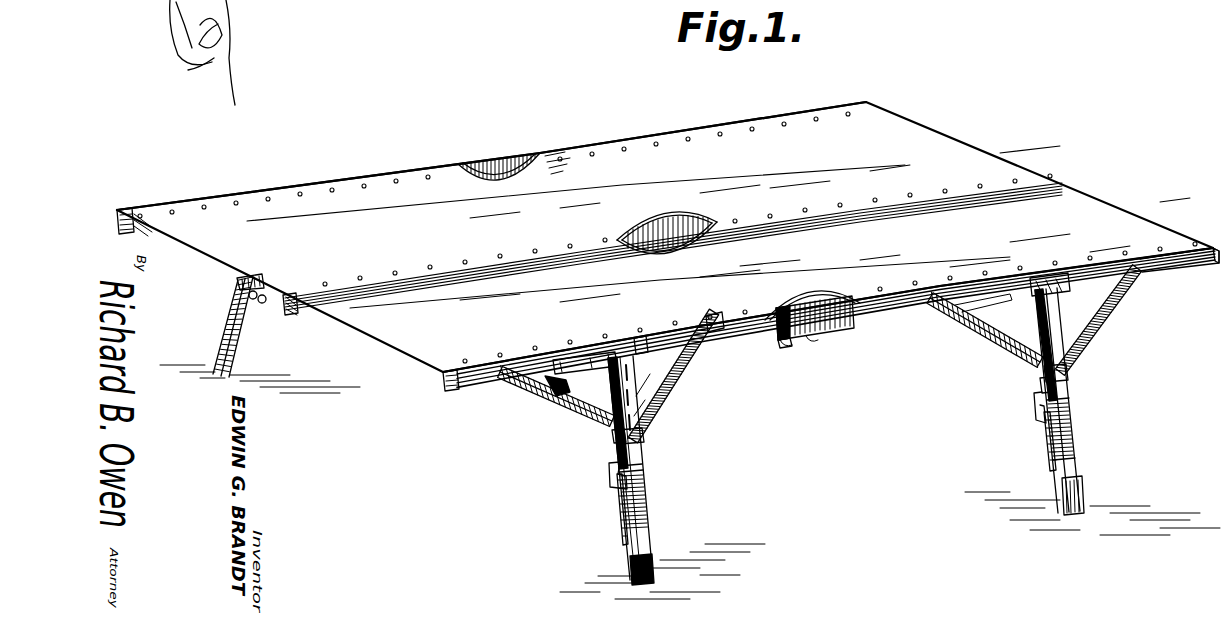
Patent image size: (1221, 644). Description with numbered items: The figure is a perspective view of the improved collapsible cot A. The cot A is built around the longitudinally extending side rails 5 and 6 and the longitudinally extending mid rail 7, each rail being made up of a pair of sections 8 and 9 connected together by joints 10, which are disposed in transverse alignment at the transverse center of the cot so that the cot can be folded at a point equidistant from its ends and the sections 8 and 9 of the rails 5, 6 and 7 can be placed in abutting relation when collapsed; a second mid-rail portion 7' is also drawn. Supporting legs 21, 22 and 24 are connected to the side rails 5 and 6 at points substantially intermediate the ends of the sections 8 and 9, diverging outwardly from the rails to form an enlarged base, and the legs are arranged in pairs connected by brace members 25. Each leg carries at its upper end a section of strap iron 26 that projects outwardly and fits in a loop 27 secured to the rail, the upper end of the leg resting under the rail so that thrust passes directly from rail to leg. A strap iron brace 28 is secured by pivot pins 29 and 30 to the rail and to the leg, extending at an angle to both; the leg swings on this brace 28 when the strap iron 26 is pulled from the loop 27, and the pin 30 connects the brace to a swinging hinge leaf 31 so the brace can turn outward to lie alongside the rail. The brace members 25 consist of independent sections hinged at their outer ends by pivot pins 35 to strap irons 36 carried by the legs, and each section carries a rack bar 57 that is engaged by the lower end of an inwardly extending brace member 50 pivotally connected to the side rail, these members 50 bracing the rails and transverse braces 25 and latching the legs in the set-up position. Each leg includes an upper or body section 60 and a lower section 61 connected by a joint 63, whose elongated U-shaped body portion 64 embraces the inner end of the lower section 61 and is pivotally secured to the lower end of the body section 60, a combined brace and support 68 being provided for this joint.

The folding cot A is at (810, 128).
The rear table top leaf 7' is at (491, 155).
The mid rail 7 is at (672, 259).
The joint 10 is at (500, 168).
The side rail 6 is at (127, 228).
The supporting leg 21 is at (236, 368).
The rail section 8 is at (495, 370).
The side rail 5 is at (472, 392).
The rail section 9 is at (1182, 264).
The brace member 50 is at (554, 362).
The loop 27 is at (640, 345).
The pivot pin 29 is at (709, 329).
The brace member 25 is at (540, 400).
The rack bar 57 is at (566, 388).
The strap iron 26 is at (627, 367).
The strap iron brace 28 is at (655, 413).
The strap iron 36 is at (634, 397).
The pivot pin 35 is at (633, 409).
The pivot pin 30 is at (642, 440).
The supporting leg 22 is at (640, 463).
The swinging hinge leaf 31 is at (612, 436).
The upper leg section 60 is at (611, 462).
The combined brace and support 68 is at (644, 482).
The leg joint 63 is at (646, 504).
The joint body portion 64 is at (624, 506).
The lower leg section 61 is at (654, 560).
The supporting leg 24 is at (1068, 388).